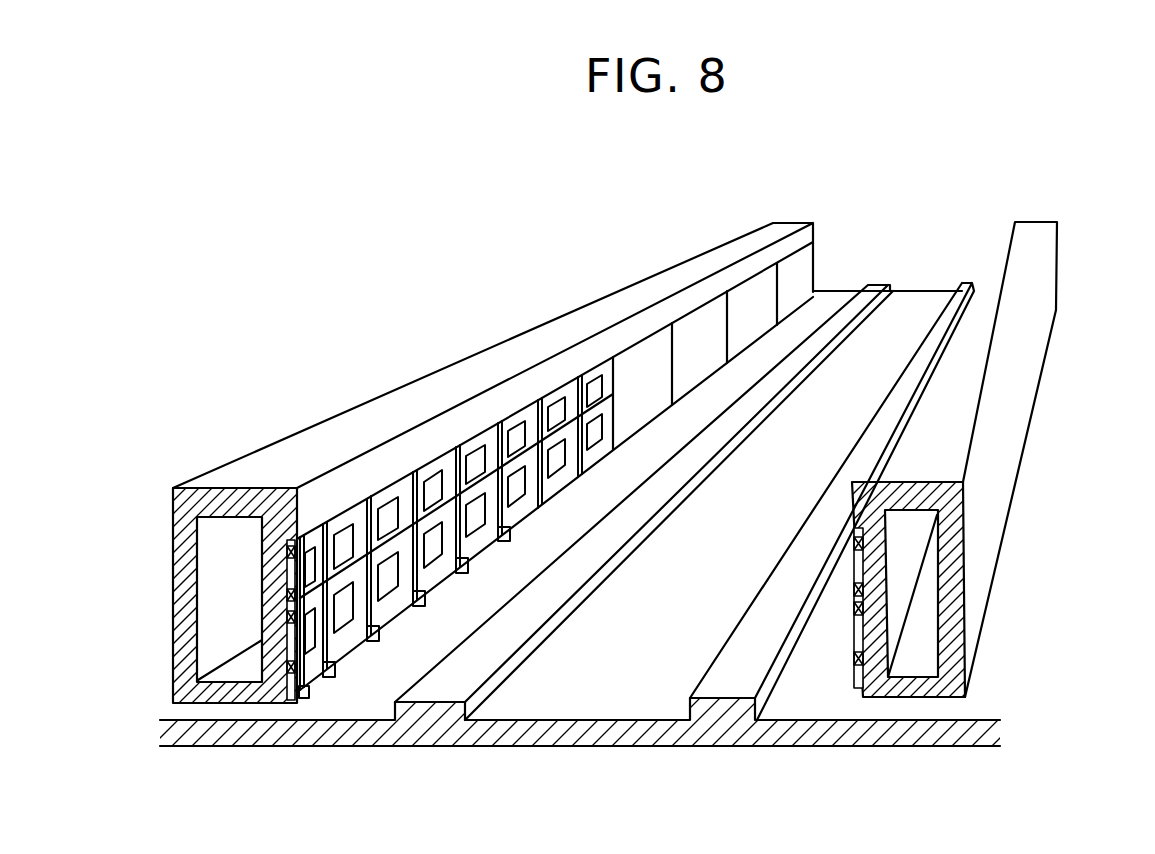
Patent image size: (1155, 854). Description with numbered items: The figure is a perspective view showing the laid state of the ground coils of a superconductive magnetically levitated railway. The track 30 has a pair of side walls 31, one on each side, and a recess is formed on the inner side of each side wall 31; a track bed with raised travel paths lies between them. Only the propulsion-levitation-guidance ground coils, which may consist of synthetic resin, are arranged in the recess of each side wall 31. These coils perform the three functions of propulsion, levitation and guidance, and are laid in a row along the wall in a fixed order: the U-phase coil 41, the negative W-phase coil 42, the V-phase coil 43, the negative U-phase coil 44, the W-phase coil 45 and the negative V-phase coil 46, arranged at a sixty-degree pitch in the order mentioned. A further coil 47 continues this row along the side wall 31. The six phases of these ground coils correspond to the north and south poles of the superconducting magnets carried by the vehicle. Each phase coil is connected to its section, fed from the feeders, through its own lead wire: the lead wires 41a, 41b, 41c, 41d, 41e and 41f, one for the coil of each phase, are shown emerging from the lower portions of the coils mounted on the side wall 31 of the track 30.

The track 30 is at (884, 240).
The side wall 31 is at (687, 273).
The U-phase coil 41 is at (300, 537).
The negative W-phase coil 42 is at (352, 517).
The V-phase coil 43 is at (397, 481).
The negative U-phase coil 44 is at (440, 470).
The W-phase coil 45 is at (477, 448).
The negative V-phase coil 46 is at (517, 428).
The unit block 47 is at (557, 413).
The lead wire 41a is at (305, 695).
The lead wire 41b is at (336, 668).
The lead wire 41c is at (380, 633).
The lead wire 41d is at (426, 596).
The lead wire 41e is at (469, 566).
The lead wire 41f is at (511, 537).